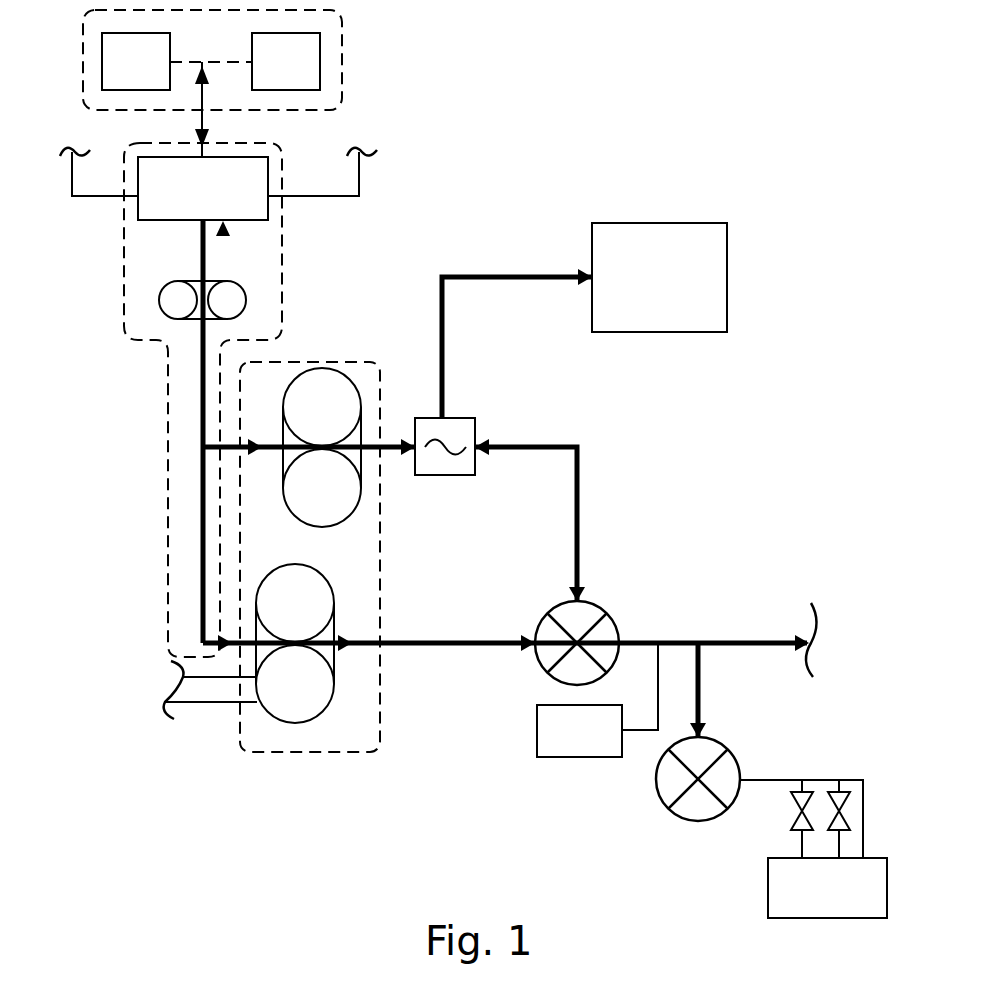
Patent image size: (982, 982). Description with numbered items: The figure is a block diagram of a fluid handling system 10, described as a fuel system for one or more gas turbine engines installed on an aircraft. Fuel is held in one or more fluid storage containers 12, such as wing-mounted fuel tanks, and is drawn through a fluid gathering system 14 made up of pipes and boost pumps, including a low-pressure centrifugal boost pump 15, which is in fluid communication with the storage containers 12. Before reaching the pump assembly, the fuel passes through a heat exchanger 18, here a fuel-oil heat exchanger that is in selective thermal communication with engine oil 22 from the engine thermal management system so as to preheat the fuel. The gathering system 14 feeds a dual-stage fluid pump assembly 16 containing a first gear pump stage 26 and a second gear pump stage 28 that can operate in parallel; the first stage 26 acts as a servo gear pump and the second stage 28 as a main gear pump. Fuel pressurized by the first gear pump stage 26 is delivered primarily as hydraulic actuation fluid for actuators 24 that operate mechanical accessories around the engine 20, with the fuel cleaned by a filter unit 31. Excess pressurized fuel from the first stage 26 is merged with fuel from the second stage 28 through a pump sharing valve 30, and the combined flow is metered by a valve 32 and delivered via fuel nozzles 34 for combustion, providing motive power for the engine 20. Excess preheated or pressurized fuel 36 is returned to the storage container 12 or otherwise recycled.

The fluid handling system 10 is at (773, 328).
The fluid storage container 12 is at (78, 68).
The fluid gathering system 14 is at (128, 405).
The low-pressure centrifugal boost pump 15 is at (151, 296).
The dual-stage fluid pump assembly 16 is at (330, 343).
The heat exchanger 18 is at (223, 234).
The engine 20 is at (756, 898).
The engine oil 22 is at (360, 173).
The actuators 24 is at (680, 222).
The first gear pump stage 26 is at (362, 411).
The second gear pump stage 28 is at (334, 610).
The pump sharing valve 30 is at (604, 610).
The filter unit 31 is at (466, 406).
The valve 32 is at (698, 821).
The fuel nozzles 34 is at (800, 808).
The excess fuel 36 is at (750, 640).